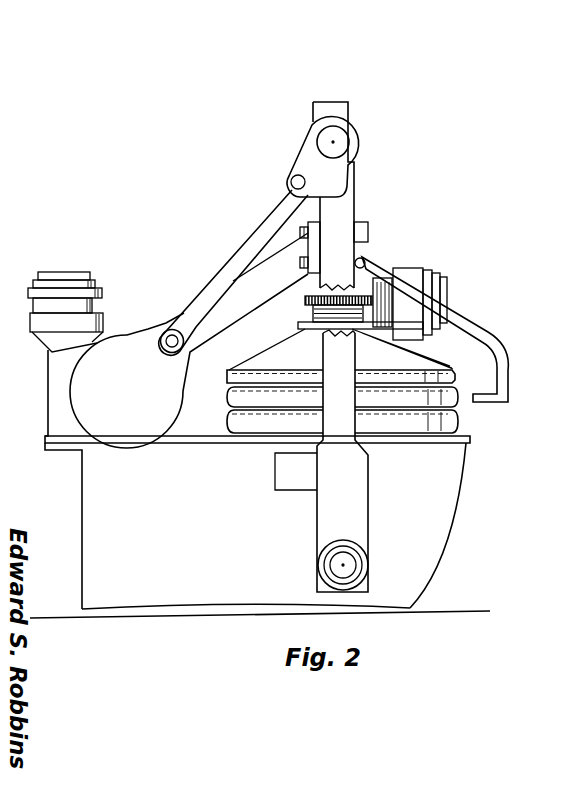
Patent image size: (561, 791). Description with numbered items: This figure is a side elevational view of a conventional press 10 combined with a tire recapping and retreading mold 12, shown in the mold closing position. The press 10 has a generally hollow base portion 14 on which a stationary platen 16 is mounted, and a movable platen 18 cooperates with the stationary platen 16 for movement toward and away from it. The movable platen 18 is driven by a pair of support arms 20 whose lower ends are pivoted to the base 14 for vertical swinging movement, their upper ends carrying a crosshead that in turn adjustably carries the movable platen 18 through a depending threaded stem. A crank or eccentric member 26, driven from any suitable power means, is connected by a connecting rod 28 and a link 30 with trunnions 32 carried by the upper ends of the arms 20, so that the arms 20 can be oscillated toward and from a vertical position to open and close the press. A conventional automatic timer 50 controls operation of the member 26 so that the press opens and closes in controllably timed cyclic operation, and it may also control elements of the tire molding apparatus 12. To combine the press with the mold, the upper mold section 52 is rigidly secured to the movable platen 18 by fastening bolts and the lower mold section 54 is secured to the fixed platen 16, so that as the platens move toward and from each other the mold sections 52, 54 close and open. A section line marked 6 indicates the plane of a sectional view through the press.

The section line 6- 6 is at (340, 255).
The press 10 is at (125, 326).
The tire recapping and retreading mold 12 is at (225, 401).
The base portion 14 is at (437, 517).
The stationary platen 16 is at (222, 444).
The movable platen 18 is at (275, 356).
The support arms 20 is at (328, 508).
The crank or eccentric member 26 is at (80, 402).
The connecting rod 28 is at (222, 280).
The link 30 is at (307, 169).
The trunnions 32 is at (336, 142).
The automatic timer 50 is at (408, 283).
The upper mold section 52 is at (427, 392).
The lower mold section 54 is at (448, 417).